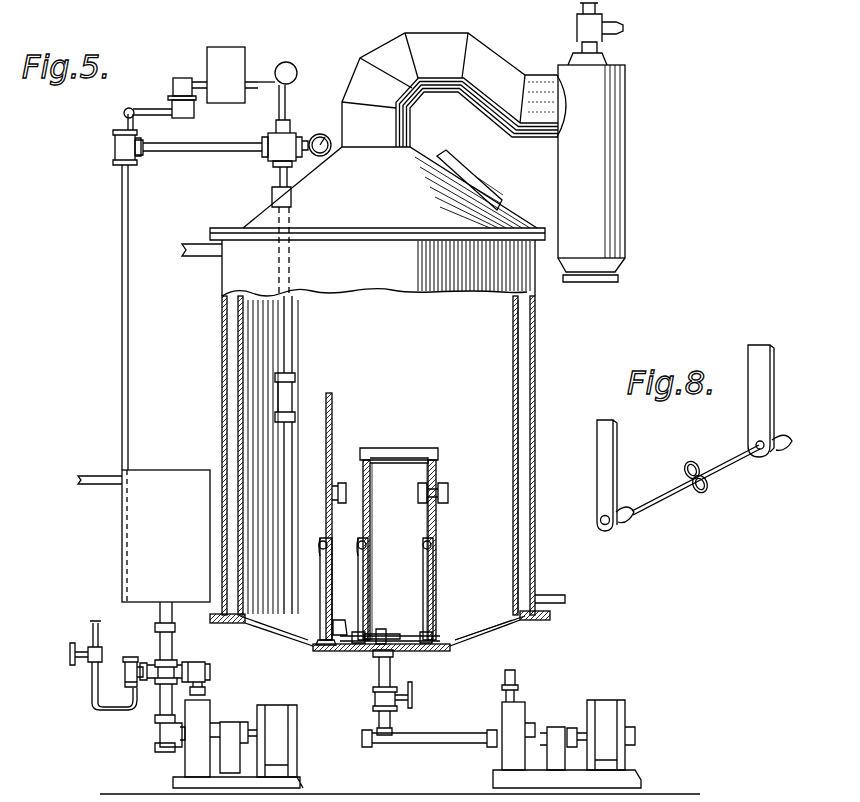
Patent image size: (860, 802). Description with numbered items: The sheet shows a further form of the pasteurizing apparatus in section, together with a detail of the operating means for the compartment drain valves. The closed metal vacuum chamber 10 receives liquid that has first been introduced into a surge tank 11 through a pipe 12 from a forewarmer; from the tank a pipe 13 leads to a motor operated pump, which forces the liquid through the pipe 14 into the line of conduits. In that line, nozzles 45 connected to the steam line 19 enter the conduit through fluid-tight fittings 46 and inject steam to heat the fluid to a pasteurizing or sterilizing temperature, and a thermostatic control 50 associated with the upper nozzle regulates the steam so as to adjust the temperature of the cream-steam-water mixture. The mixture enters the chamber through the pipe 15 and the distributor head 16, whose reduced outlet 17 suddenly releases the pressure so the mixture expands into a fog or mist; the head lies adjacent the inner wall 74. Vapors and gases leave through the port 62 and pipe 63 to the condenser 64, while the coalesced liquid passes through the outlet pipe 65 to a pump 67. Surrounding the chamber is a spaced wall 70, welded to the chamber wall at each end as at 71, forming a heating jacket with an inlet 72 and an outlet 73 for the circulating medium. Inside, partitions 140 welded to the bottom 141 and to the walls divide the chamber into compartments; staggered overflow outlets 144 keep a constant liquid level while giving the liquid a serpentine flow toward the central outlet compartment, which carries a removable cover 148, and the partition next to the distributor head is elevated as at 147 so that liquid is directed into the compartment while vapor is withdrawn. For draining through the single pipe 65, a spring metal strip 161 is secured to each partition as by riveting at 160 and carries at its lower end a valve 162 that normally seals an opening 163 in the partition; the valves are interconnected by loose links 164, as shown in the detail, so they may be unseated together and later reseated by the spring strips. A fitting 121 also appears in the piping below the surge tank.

In FIG. 5, the vacuum chamber 10 is at (170, 770).
In FIG. 5, the surge tank 11 is at (130, 410).
In FIG. 5, the pipe 12 is at (88, 487).
In FIG. 5, the pipe 13 is at (195, 150).
In FIG. 5, the pipe 14 is at (160, 682).
In FIG. 5, the pipe 15 is at (293, 324).
In FIG. 5, the distributor head 16 is at (292, 397).
In FIG. 5, the reduced outlet 17 is at (290, 430).
In FIG. 5, the steam line 19 is at (153, 112).
In FIG. 5, the nozzles 45 is at (117, 165).
In FIG. 5, the fluid-tight fittings 46 is at (115, 146).
In FIG. 5, the thermostatic control 50 is at (231, 58).
In FIG. 5, the port 62 is at (390, 187).
In FIG. 5, the pipe 63 is at (446, 90).
In FIG. 5, the condenser 64 is at (596, 160).
In FIG. 5, the outlet pipe 65 is at (391, 667).
In FIG. 5, the pump 67 is at (513, 718).
In FIG. 5, the spaced wall 70 is at (537, 383).
In FIG. 5, the welding 71 is at (537, 623).
In FIG. 5, the inlet 72 is at (558, 597).
In FIG. 5, the outlet 73 is at (197, 250).
In FIG. 5, the inner wall 74 is at (518, 470).
In FIG. 5, the fitting 121 is at (170, 605).
In FIG. 5, the partitions 140 is at (434, 532).
In FIG. 5, the bottom 141 is at (488, 630).
In FIG. 5, the overflow outlets 144 is at (338, 483).
In FIG. 5, the elevated partition portion 147 is at (333, 408).
In FIG. 5, the removable cover 148 is at (415, 450).
In FIG. 5, the riveting or welding 160 is at (325, 538).
In FIG. 5, the spring metal strip 161 is at (318, 584).
In FIG. 8, the spring metal strip 161 is at (772, 333).
In FIG. 5, the valve 162 is at (330, 641).
In FIG. 8, the valve 162 is at (790, 450).
In FIG. 5, the opening 163 is at (334, 643).
In FIG. 5, the loose links 164 is at (354, 632).
In FIG. 8, the loose links 164 is at (697, 466).